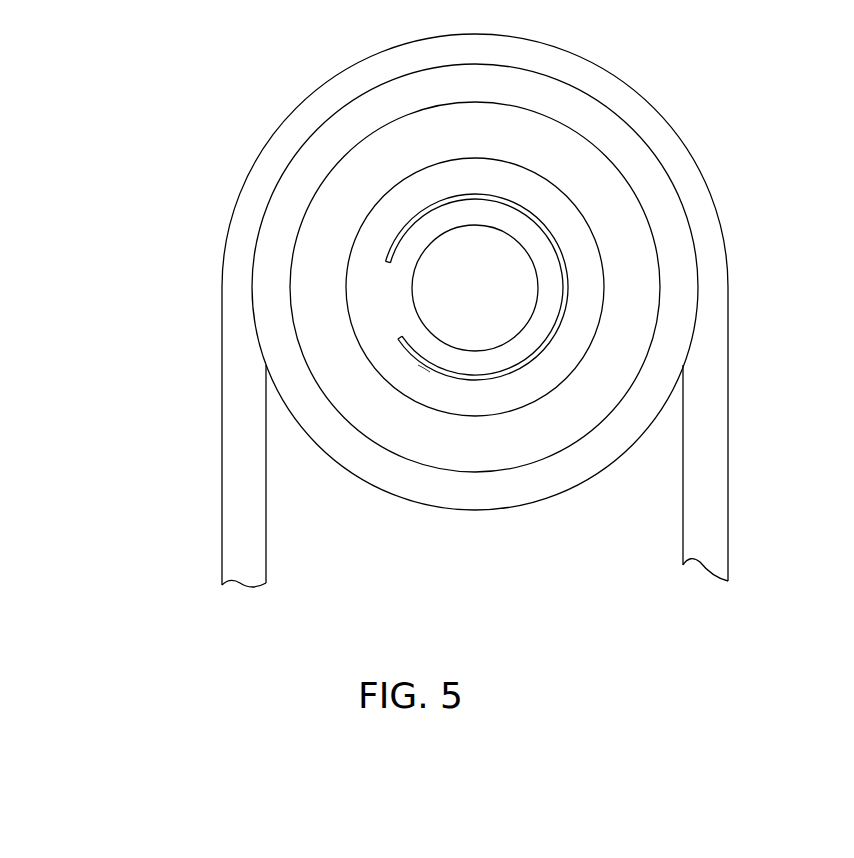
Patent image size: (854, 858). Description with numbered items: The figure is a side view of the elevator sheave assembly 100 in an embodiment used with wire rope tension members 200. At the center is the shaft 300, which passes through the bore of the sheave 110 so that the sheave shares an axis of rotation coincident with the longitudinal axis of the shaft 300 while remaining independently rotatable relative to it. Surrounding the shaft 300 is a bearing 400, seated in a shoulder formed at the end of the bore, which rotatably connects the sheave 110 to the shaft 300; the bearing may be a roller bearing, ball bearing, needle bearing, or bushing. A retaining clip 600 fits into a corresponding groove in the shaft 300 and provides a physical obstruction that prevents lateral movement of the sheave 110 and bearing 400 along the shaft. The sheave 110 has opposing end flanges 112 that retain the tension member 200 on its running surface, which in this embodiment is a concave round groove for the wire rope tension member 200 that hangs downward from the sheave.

The elevator sheave assembly 100 is at (171, 80).
The sheave 110 is at (477, 512).
The end flange 112 is at (298, 187).
The tension member 200 is at (222, 480).
The shaft 300 is at (497, 301).
The bearing 400 is at (366, 257).
The retaining clip 600 is at (425, 370).